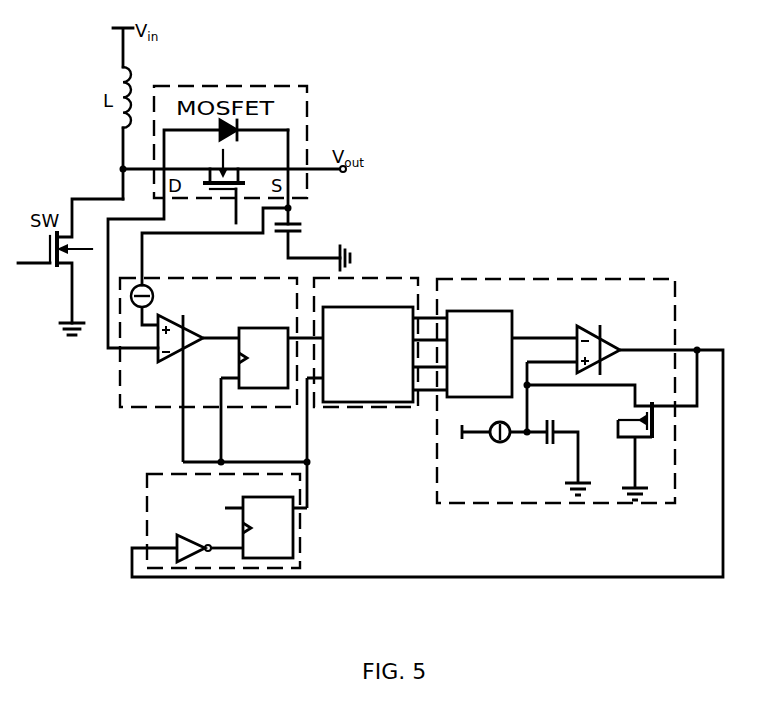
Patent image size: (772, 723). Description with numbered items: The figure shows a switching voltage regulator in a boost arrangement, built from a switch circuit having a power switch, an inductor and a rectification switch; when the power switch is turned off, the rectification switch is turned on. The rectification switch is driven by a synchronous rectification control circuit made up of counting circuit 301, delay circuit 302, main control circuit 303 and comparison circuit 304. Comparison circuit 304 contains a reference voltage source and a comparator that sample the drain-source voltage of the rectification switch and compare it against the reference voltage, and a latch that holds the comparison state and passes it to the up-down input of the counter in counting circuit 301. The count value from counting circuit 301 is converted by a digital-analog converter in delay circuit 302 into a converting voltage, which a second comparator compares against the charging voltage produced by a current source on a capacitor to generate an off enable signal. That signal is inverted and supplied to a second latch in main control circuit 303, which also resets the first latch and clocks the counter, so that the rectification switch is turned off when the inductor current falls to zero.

The counting circuit 301 is at (367, 409).
The delay circuit 302 is at (566, 279).
The main control circuit 303 is at (146, 503).
The comparison circuit 304 is at (120, 382).